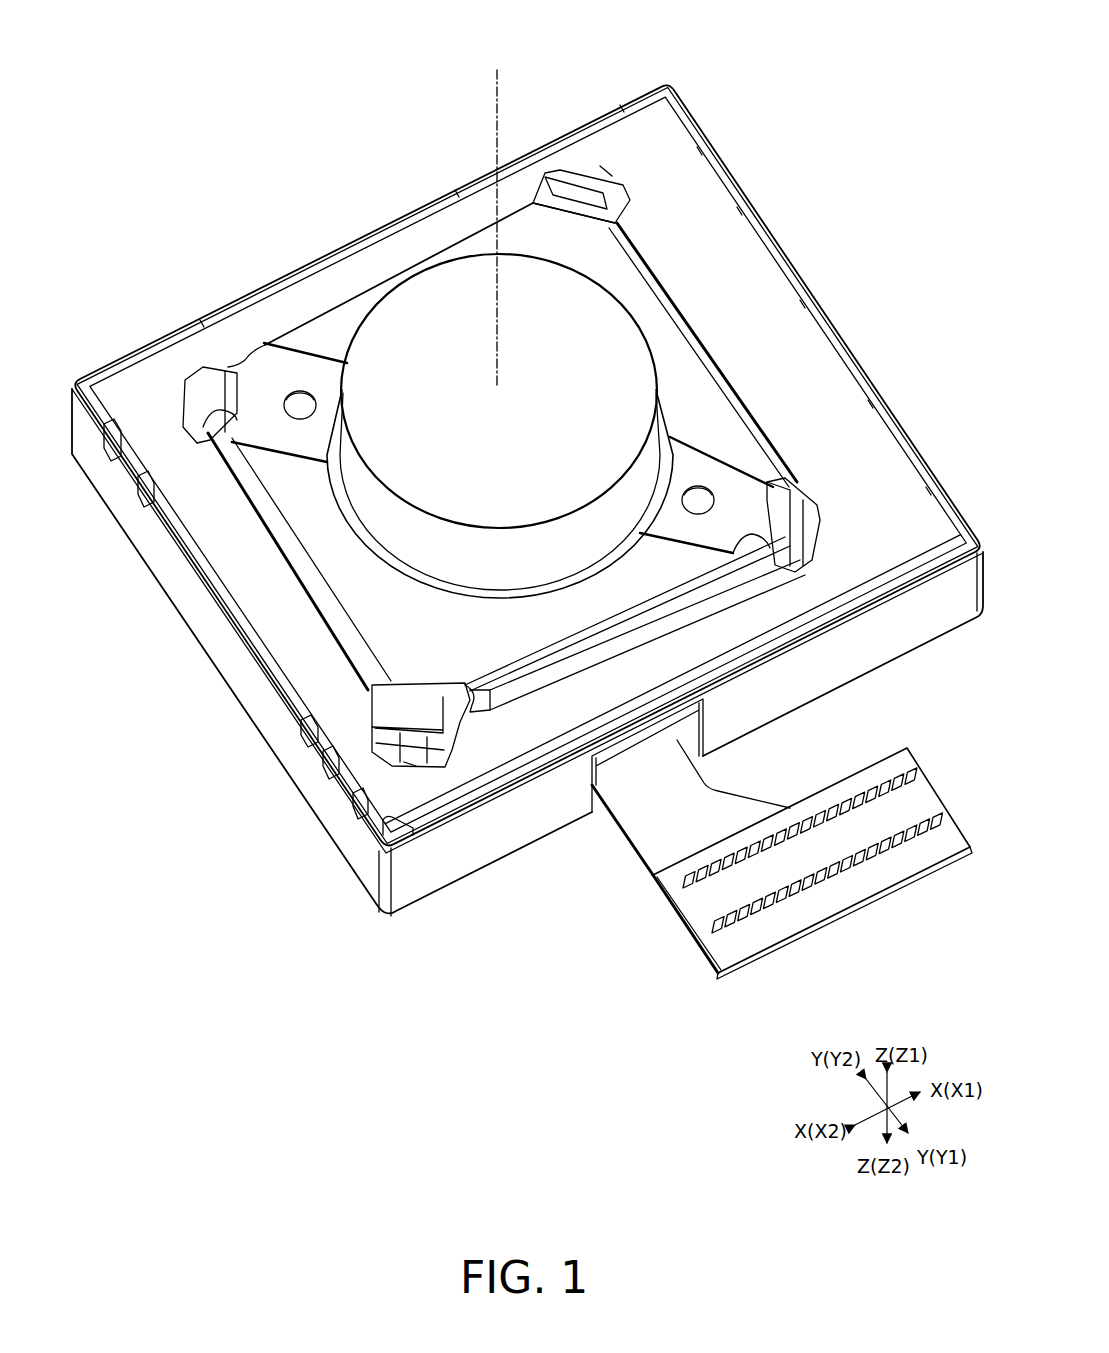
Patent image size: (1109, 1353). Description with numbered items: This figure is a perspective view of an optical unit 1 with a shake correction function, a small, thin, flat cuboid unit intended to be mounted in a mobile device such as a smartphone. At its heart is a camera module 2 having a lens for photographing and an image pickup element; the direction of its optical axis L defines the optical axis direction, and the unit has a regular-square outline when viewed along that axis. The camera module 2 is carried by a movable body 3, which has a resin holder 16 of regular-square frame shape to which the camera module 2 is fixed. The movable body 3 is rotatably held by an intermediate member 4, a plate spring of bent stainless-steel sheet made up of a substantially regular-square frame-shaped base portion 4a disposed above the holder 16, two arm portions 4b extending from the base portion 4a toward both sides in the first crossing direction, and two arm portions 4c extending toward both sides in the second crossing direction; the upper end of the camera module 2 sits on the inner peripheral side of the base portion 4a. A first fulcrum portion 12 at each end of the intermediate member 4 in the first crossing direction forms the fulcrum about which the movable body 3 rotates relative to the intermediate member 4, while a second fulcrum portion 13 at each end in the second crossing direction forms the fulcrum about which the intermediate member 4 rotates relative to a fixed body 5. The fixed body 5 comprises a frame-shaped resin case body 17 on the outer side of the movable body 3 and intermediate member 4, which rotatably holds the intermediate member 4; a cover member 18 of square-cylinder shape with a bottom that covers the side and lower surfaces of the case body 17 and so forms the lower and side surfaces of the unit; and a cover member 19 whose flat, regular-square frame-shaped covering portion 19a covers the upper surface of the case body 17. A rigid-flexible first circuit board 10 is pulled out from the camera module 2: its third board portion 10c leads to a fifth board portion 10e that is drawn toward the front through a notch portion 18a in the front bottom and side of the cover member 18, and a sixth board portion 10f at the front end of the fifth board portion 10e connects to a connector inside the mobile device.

The optical unit 1 is at (886, 68).
The camera module 2 is at (525, 426).
The movable body 3 is at (648, 335).
The intermediate member 4 is at (502, 432).
The base portion 4a is at (383, 280).
The arm portions 4b is at (228, 367).
The arm portions 4c is at (580, 188).
The fixed body 5 is at (527, 668).
The first circuit board 10 is at (655, 807).
The third board portion 10c is at (640, 742).
The fifth board portion 10e is at (622, 838).
The sixth board portion 10f is at (690, 938).
The first fulcrum portion 12 is at (178, 392).
The second fulcrum portion 13 is at (608, 163).
The holder 16 is at (491, 686).
The case body 17 is at (357, 826).
The cover member 18 is at (445, 886).
The notch portion 18a is at (590, 800).
The cover member 19 is at (528, 464).
The covering portion 19a is at (270, 290).
The optical axis L is at (492, 76).